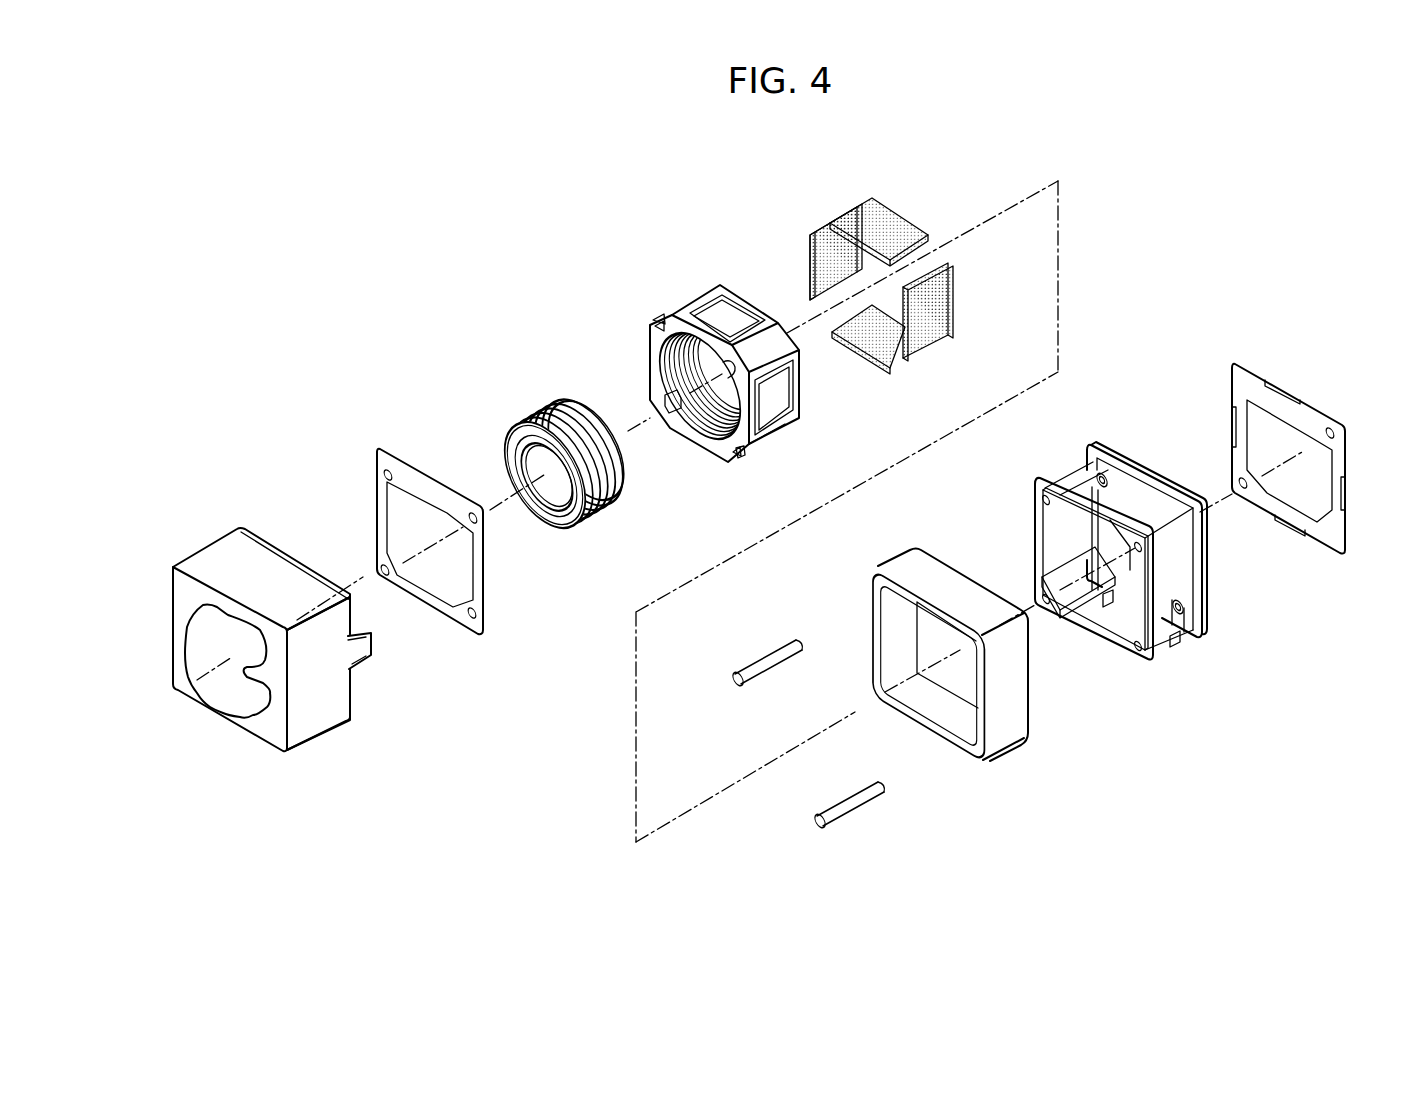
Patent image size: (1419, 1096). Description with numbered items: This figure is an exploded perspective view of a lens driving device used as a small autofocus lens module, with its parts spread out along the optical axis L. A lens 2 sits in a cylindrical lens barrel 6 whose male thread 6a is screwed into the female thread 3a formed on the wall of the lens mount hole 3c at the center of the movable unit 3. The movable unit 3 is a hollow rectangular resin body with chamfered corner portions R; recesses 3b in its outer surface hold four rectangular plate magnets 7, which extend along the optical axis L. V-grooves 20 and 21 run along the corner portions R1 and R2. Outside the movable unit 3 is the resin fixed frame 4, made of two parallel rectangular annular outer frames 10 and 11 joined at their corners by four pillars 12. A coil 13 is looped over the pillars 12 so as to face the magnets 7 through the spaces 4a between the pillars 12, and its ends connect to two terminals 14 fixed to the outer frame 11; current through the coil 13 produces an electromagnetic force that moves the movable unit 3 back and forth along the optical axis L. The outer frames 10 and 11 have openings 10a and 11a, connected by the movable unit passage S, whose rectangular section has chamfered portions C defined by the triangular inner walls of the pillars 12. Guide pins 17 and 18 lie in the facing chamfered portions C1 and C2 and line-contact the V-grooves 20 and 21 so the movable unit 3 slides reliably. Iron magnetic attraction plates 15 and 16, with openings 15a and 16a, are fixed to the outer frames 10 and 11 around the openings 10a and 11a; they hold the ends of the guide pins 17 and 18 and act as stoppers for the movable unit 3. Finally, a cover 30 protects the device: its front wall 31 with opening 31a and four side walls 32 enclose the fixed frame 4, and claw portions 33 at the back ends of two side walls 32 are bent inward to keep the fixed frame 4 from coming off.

The lens 2 is at (560, 490).
The movable unit 3 is at (728, 361).
The female thread 3a is at (705, 410).
The recesses 3b is at (733, 318).
The lens mount hole 3c is at (705, 360).
The fixed frame 4 is at (1118, 536).
The spaces 4a is at (1120, 492).
The lens barrel 6 is at (591, 488).
The male thread 6a is at (622, 500).
The magnets 7 is at (887, 213).
The outer frame 10 is at (1118, 575).
The opening 10a is at (1040, 530).
The outer frame 11 is at (1197, 543).
The opening 11a is at (1187, 580).
The pillars 12 is at (1073, 475).
The coil 13 is at (897, 560).
The terminals 14 is at (1180, 640).
The magnetic attraction plate 15 is at (393, 526).
The opening 15a is at (423, 503).
The magnetic attraction plate 16 is at (1321, 433).
The opening 16a is at (1275, 420).
The guide pin 17 is at (777, 660).
The guide pin 18 is at (862, 802).
The V-groove 20 is at (655, 320).
The V-groove 21 is at (738, 458).
The cover 30 is at (273, 636).
The front wall 31 is at (252, 668).
The opening 31a is at (235, 712).
The side walls 32 is at (355, 684).
The claw portions 33 is at (372, 645).
The optical axis L is at (995, 215).
The corner portions R is at (652, 405).
The corner portion R1 is at (658, 318).
The corner portion R2 is at (755, 452).
The chamfered portions C is at (1067, 575).
The chamfered portion C1 is at (1037, 507).
The chamfered portion C2 is at (1123, 630).
The movable unit passage S is at (1110, 538).